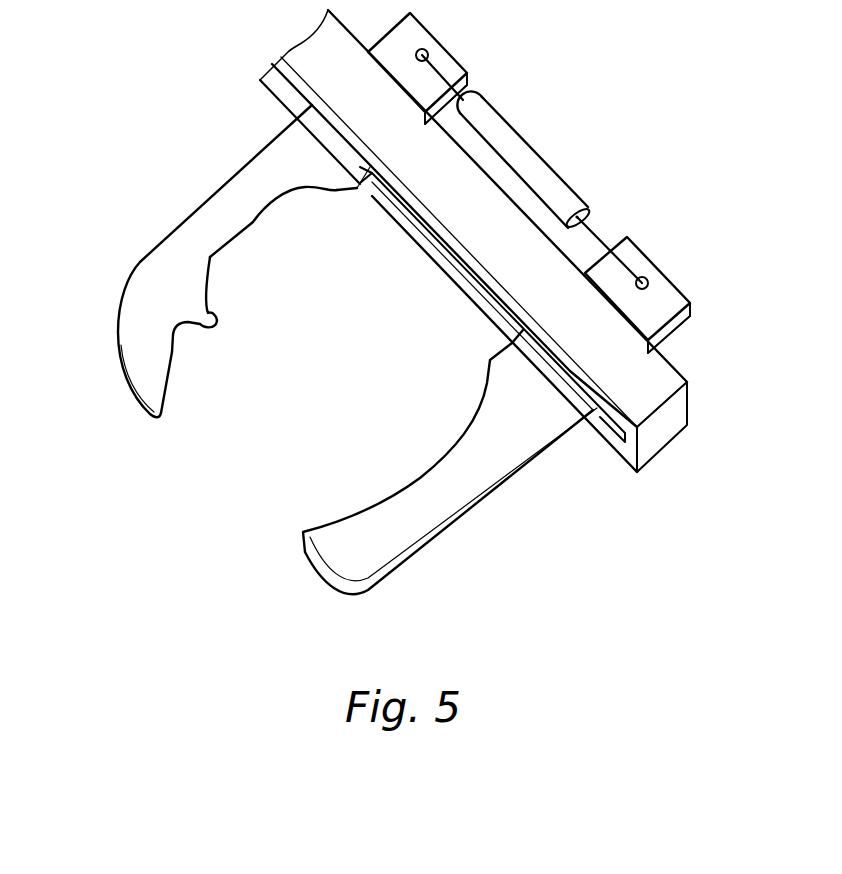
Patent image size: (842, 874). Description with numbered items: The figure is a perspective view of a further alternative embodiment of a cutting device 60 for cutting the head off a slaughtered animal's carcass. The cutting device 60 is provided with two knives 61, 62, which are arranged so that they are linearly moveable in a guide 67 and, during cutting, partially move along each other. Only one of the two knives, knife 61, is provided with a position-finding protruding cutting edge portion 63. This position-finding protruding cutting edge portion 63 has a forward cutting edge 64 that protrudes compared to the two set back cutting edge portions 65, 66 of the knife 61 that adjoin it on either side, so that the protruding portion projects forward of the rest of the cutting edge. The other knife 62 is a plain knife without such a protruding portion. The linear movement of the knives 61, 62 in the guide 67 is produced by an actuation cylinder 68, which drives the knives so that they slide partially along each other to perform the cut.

The cutting device 60 is at (211, 506).
The knife 61 is at (113, 284).
The knife 62 is at (458, 550).
The position-finding protruding cutting edge portion 63 is at (210, 310).
The forward cutting edge 64 is at (218, 324).
The set back cutting edge portion 65 is at (173, 353).
The set back cutting edge portion 66 is at (253, 222).
The guide 67 is at (654, 379).
The actuation cylinder 68 is at (525, 160).